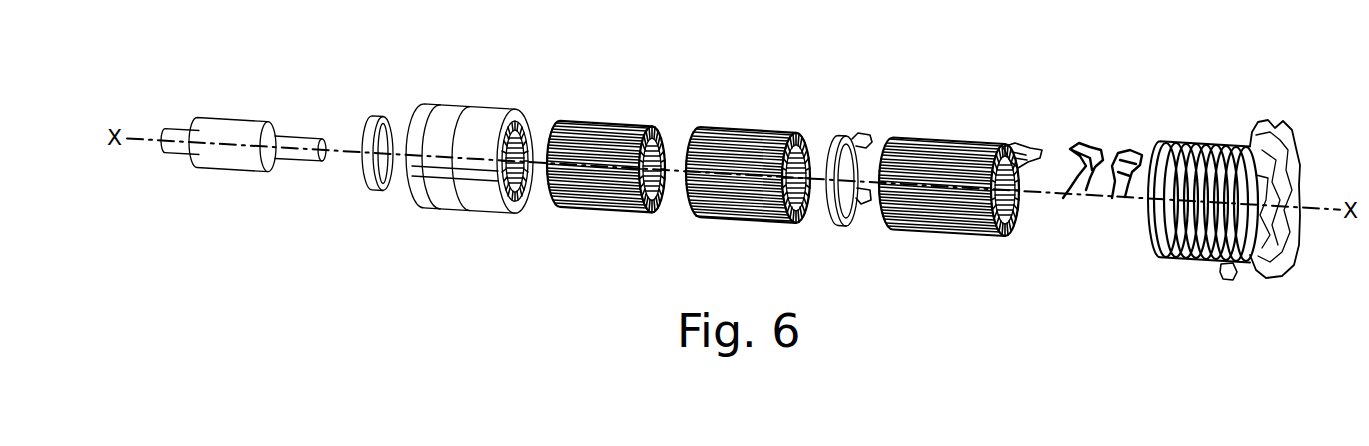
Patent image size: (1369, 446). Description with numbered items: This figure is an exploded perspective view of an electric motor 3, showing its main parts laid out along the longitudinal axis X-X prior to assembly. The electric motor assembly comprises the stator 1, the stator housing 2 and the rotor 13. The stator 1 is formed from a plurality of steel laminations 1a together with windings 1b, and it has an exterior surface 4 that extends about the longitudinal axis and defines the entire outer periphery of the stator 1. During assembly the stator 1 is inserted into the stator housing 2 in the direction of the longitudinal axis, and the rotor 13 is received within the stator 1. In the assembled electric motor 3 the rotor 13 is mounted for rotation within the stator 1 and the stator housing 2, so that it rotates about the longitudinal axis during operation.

The stator 1 is at (702, 171).
The steel laminations 1a is at (473, 112).
The windings 1b is at (640, 127).
The stator housing 2 is at (1200, 290).
The electric motor 3 is at (627, 65).
The exterior surface 4 is at (443, 106).
The rotor 13 is at (242, 169).